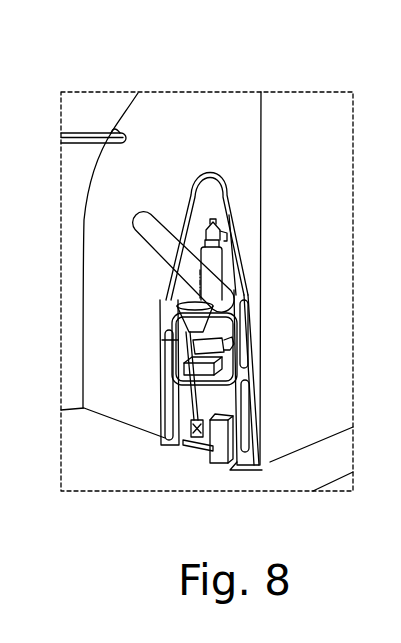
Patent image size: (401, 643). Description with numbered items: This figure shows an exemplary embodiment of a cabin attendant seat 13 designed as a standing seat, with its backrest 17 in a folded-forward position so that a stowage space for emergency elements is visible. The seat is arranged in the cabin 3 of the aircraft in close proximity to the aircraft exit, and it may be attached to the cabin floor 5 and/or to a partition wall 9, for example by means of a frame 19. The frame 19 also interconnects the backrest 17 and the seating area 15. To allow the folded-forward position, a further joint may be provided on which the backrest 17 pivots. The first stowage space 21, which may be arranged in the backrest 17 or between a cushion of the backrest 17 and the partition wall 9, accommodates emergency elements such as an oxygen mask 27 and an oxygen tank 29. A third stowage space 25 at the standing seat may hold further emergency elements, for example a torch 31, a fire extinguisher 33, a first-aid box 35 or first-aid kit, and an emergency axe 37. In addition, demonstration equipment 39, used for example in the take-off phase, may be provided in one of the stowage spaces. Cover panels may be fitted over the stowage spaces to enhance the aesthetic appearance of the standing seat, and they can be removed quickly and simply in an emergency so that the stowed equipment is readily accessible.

The cabin 3 is at (298, 118).
The cabin floor 5 is at (90, 470).
The partition wall 9 is at (188, 113).
The cabin attendant seat 13 is at (254, 238).
The seating area 15 is at (250, 325).
The backrest 17 is at (213, 270).
The frame 19 is at (250, 375).
The first stowage space 21 is at (212, 197).
The third stowage space 25 is at (250, 345).
The oxygen mask 27 is at (193, 212).
The oxygen tank 29 is at (200, 236).
The torch 31 is at (174, 338).
The fire extinguisher 33 is at (172, 350).
The first-aid box 35 is at (188, 366).
The emergency axe 37 is at (183, 420).
The demonstration equipment 39 is at (220, 445).